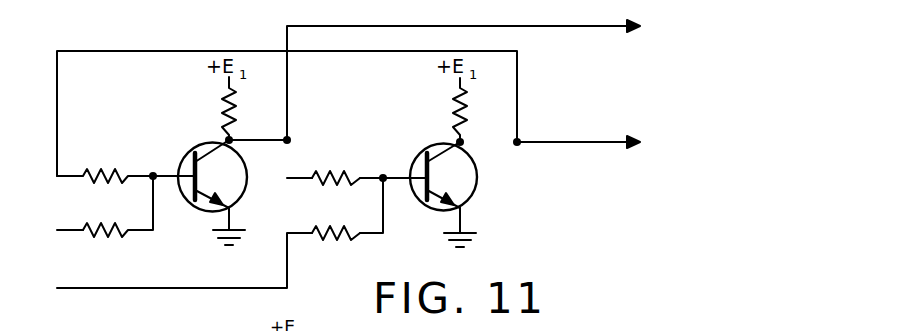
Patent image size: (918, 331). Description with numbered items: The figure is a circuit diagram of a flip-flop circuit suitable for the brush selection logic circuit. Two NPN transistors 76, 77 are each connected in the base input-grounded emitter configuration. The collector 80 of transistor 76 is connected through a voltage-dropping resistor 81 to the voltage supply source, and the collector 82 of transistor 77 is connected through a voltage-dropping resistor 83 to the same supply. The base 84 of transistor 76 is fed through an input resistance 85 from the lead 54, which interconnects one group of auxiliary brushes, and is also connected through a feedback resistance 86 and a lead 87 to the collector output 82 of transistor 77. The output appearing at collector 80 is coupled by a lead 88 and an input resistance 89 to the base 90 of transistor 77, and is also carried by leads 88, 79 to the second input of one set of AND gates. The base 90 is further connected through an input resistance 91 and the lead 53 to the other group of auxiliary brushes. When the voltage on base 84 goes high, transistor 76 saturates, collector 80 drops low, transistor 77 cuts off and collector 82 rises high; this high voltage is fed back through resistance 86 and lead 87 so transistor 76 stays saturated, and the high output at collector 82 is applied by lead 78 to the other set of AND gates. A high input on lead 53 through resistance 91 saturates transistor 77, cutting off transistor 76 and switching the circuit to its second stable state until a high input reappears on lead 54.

The lead 53 is at (72, 288).
The lead 54 is at (72, 230).
The transistor 76 is at (248, 160).
The transistor 77 is at (477, 170).
The lead 78 is at (598, 142).
The lead 79 is at (494, 26).
The collector 80 is at (216, 144).
The voltage-dropping resistor 81 is at (244, 100).
The collector 82 is at (445, 140).
The voltage-dropping resistor 83 is at (476, 100).
The base 84 is at (183, 160).
The input resistance 85 is at (125, 225).
The feedback resistance 86 is at (121, 171).
The lead 87 is at (186, 50).
The lead 88 is at (251, 137).
The input resistance 89 is at (351, 172).
The base 90 is at (413, 165).
The input resistance 91 is at (356, 228).